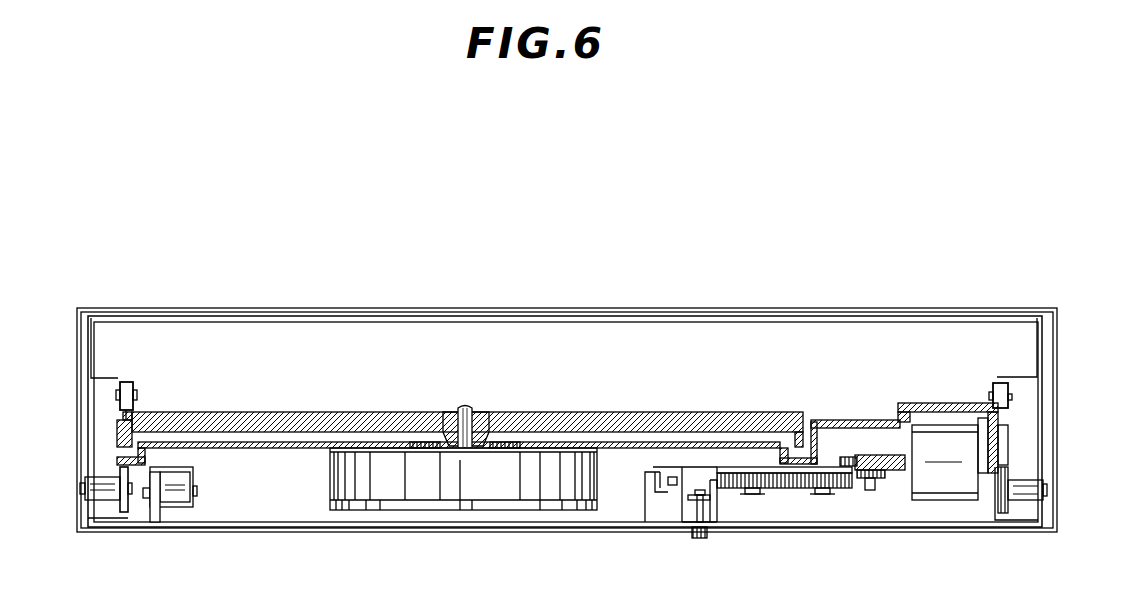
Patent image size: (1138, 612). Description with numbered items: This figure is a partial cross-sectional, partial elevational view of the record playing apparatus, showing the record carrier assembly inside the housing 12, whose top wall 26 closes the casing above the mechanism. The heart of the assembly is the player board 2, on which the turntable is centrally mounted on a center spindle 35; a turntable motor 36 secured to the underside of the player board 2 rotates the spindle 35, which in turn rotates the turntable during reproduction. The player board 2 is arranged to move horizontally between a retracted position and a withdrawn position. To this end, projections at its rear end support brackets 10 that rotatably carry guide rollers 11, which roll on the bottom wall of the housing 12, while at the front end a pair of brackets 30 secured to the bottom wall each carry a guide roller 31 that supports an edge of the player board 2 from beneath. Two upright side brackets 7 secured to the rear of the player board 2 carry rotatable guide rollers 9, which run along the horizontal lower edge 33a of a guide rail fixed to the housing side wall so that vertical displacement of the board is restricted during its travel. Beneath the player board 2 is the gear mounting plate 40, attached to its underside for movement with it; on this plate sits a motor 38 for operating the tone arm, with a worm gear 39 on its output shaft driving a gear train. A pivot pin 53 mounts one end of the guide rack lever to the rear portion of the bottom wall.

The player board 2 is at (270, 449).
The upright side bracket 7 is at (134, 408).
The guide roller 9 is at (131, 386).
The bracket 10 is at (194, 476).
The guide roller 11 is at (153, 522).
The housing 12 is at (386, 307).
The top wall 26 is at (331, 308).
The bracket 30 is at (123, 512).
The guide roller 31 is at (118, 474).
The horizontal lower edge 33a is at (103, 382).
The center spindle 35 is at (469, 406).
The turntable motor 36 is at (332, 486).
The motor 38 is at (947, 500).
The worm gear 39 is at (897, 472).
The gear mounting plate 40 is at (855, 436).
The pivot pin 53 is at (695, 505).